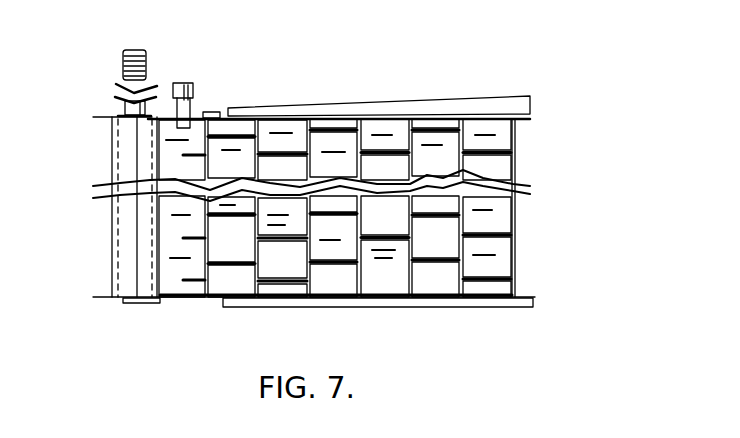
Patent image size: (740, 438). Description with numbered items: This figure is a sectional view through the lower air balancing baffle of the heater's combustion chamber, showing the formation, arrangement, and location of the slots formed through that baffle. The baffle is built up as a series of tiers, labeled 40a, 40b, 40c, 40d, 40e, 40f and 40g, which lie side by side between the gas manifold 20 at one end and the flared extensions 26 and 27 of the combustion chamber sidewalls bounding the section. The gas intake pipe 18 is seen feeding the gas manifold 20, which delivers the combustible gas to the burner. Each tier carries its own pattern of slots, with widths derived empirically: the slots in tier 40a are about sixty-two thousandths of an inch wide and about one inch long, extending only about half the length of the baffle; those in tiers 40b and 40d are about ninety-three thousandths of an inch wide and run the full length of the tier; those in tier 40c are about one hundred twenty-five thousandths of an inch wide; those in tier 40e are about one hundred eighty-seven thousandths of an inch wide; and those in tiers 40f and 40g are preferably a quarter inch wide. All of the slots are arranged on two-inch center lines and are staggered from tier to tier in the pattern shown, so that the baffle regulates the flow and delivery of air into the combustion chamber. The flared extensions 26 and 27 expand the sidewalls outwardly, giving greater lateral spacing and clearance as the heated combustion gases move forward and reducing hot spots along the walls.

The gas intake pipe 18 is at (137, 48).
The gas manifold 20 is at (126, 151).
The flared extension 26 is at (530, 97).
The flared extension 27 is at (533, 308).
The air balancing baffle tier 40a is at (170, 281).
The air balancing baffle tier 40b is at (220, 283).
The air balancing baffle tier 40c is at (278, 286).
The air balancing baffle tier 40d is at (333, 283).
The air balancing baffle tier 40e is at (383, 288).
The air balancing baffle tier 40f is at (438, 280).
The air balancing baffle tier 40g is at (492, 283).